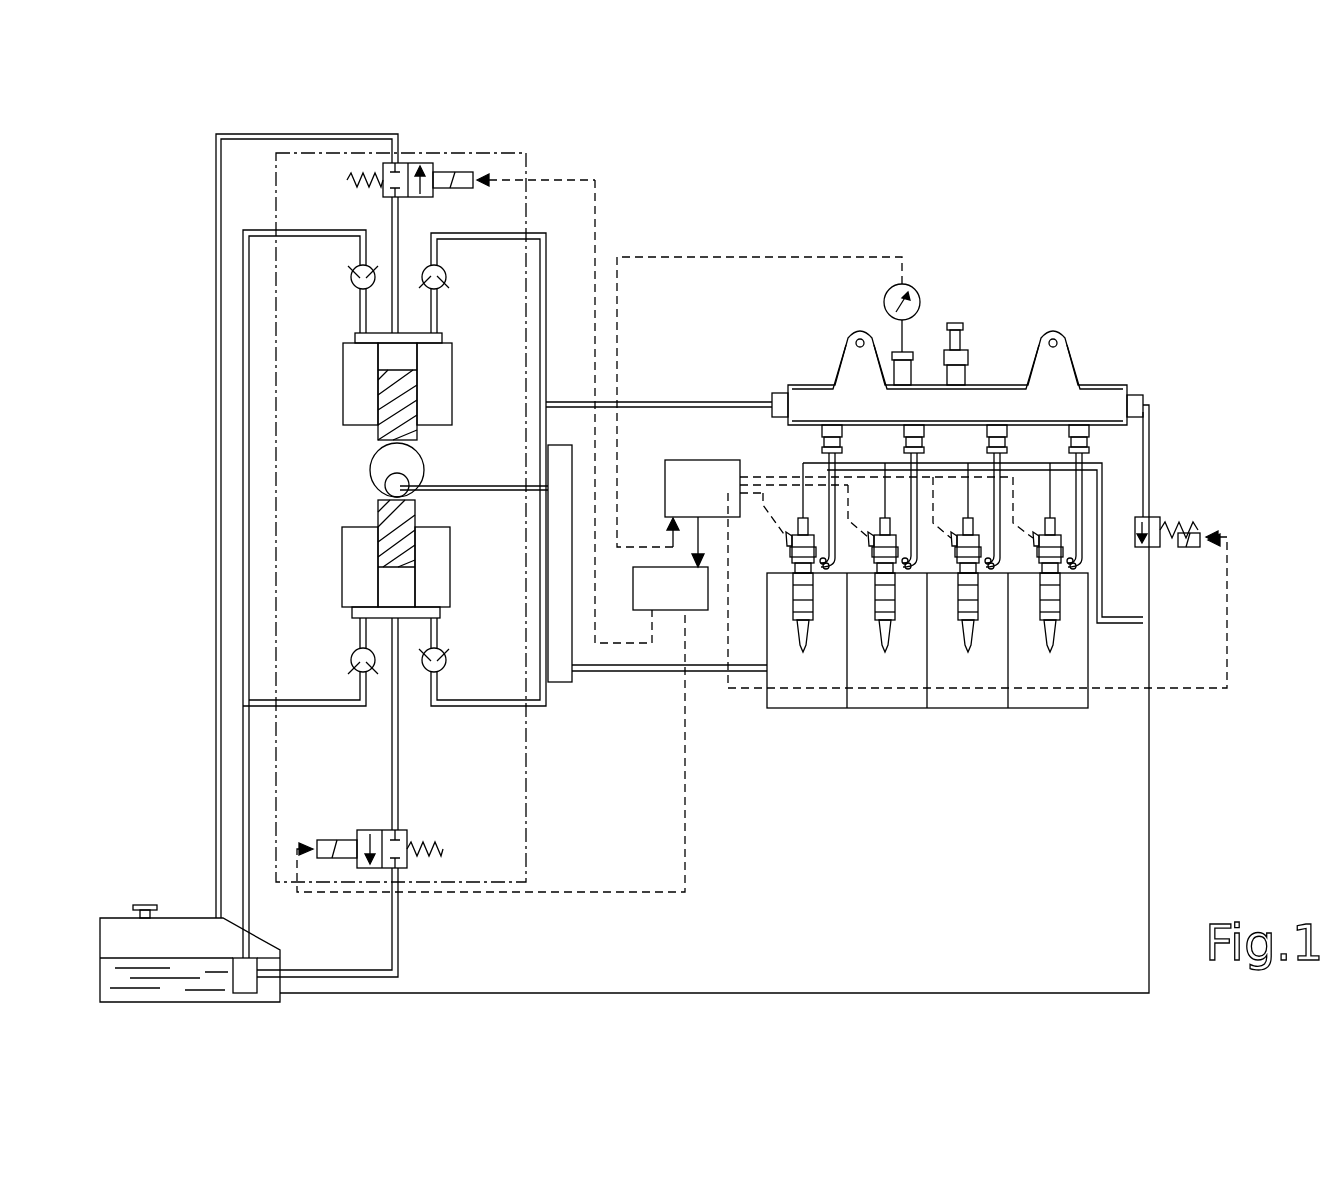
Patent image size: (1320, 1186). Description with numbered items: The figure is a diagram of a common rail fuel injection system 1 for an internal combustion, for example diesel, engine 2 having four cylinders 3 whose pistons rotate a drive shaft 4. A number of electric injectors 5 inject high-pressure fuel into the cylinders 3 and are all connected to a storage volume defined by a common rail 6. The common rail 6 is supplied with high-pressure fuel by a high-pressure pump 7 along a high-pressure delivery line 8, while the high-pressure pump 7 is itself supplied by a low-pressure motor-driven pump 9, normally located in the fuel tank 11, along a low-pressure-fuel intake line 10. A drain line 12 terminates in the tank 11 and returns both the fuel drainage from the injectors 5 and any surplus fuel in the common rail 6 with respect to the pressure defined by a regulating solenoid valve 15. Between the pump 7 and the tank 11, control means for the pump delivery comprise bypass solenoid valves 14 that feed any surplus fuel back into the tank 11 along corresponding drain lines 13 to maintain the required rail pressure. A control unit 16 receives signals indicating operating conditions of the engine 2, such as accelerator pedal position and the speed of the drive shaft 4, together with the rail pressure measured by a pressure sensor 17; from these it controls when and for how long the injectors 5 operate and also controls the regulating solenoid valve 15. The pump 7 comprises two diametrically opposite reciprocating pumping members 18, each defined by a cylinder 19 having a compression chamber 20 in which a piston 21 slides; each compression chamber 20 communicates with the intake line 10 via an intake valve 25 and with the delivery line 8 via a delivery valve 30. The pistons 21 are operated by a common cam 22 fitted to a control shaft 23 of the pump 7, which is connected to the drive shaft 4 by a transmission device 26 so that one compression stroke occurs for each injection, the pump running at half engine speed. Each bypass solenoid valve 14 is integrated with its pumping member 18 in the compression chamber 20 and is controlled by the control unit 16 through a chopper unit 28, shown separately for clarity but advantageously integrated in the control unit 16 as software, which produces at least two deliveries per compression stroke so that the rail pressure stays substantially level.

The common rail fuel injection system 1 is at (1031, 265).
The engine 2 is at (1112, 676).
The cylinders 3 is at (942, 703).
The drive shaft 4 is at (703, 672).
The electric injectors 5 is at (978, 587).
The common rail 6 is at (990, 400).
The high-pressure pump 7 is at (526, 178).
The high-pressure delivery line 8 is at (648, 402).
The motor-driven pump 9 is at (257, 978).
The low-pressure-fuel intake line 10 is at (243, 620).
The fuel tank 11 is at (135, 925).
The drain line 12 is at (1030, 987).
The drain lines 13 is at (221, 510).
The bypass solenoid valve 14 is at (383, 190).
The regulating solenoid valve 15 is at (1155, 520).
The control unit 16 is at (700, 462).
The pressure sensor 17 is at (920, 302).
The pumping members 18 is at (440, 392).
The cylinder 19 is at (360, 400).
The compression chamber 20 is at (400, 348).
The piston 21 is at (408, 428).
The cam means 22 is at (385, 461).
The control shaft 23 is at (490, 487).
The intake valve 25 is at (352, 288).
The transmission device 26 is at (557, 680).
The chopper unit 28 is at (703, 600).
The delivery valve 30 is at (447, 277).